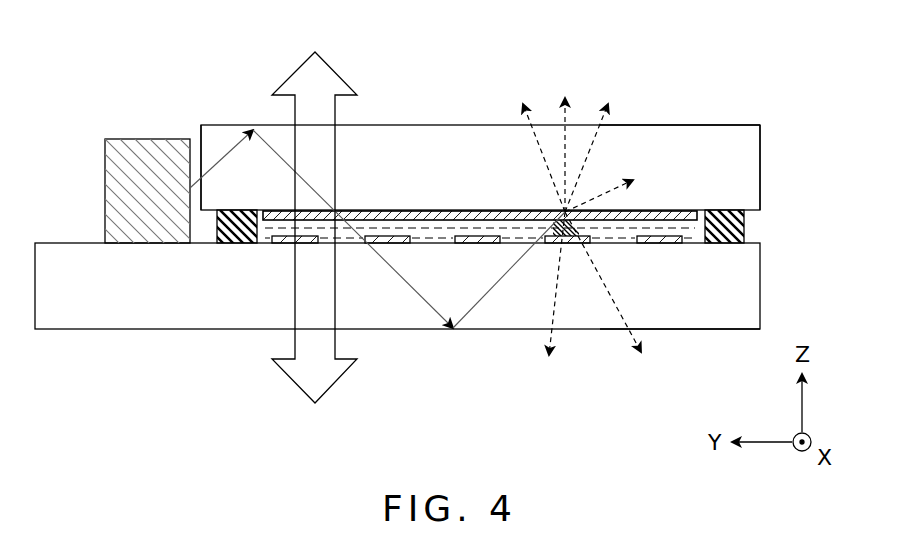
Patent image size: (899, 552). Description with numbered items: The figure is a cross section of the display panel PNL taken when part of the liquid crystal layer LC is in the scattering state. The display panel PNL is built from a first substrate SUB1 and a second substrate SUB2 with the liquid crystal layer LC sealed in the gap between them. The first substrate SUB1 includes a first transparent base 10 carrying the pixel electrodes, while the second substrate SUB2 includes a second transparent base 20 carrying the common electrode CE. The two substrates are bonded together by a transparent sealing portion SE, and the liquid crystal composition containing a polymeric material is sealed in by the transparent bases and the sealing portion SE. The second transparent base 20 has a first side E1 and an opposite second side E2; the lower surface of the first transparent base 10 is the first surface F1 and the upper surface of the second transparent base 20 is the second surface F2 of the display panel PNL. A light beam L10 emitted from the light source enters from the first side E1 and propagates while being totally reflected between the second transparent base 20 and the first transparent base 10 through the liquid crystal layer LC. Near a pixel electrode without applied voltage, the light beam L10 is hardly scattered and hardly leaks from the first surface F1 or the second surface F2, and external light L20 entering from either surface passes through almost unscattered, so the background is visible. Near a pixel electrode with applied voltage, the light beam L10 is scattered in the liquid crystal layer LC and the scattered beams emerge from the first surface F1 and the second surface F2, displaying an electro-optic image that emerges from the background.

The first substrate SUB1 is at (766, 264).
The second substrate SUB2 is at (766, 182).
The display panel PNL is at (481, 100).
The first transparent base 10 is at (423, 331).
The second transparent base 20 is at (423, 124).
The first side E1 is at (199, 123).
The second side E2 is at (763, 130).
The first surface F1 is at (690, 331).
The second surface F2 is at (677, 124).
The sealing portion SE is at (746, 227).
The common electrode CE is at (455, 210).
The liquid crystal layer LC is at (442, 240).
The light beam L10 is at (218, 138).
The external light L20 is at (339, 75).